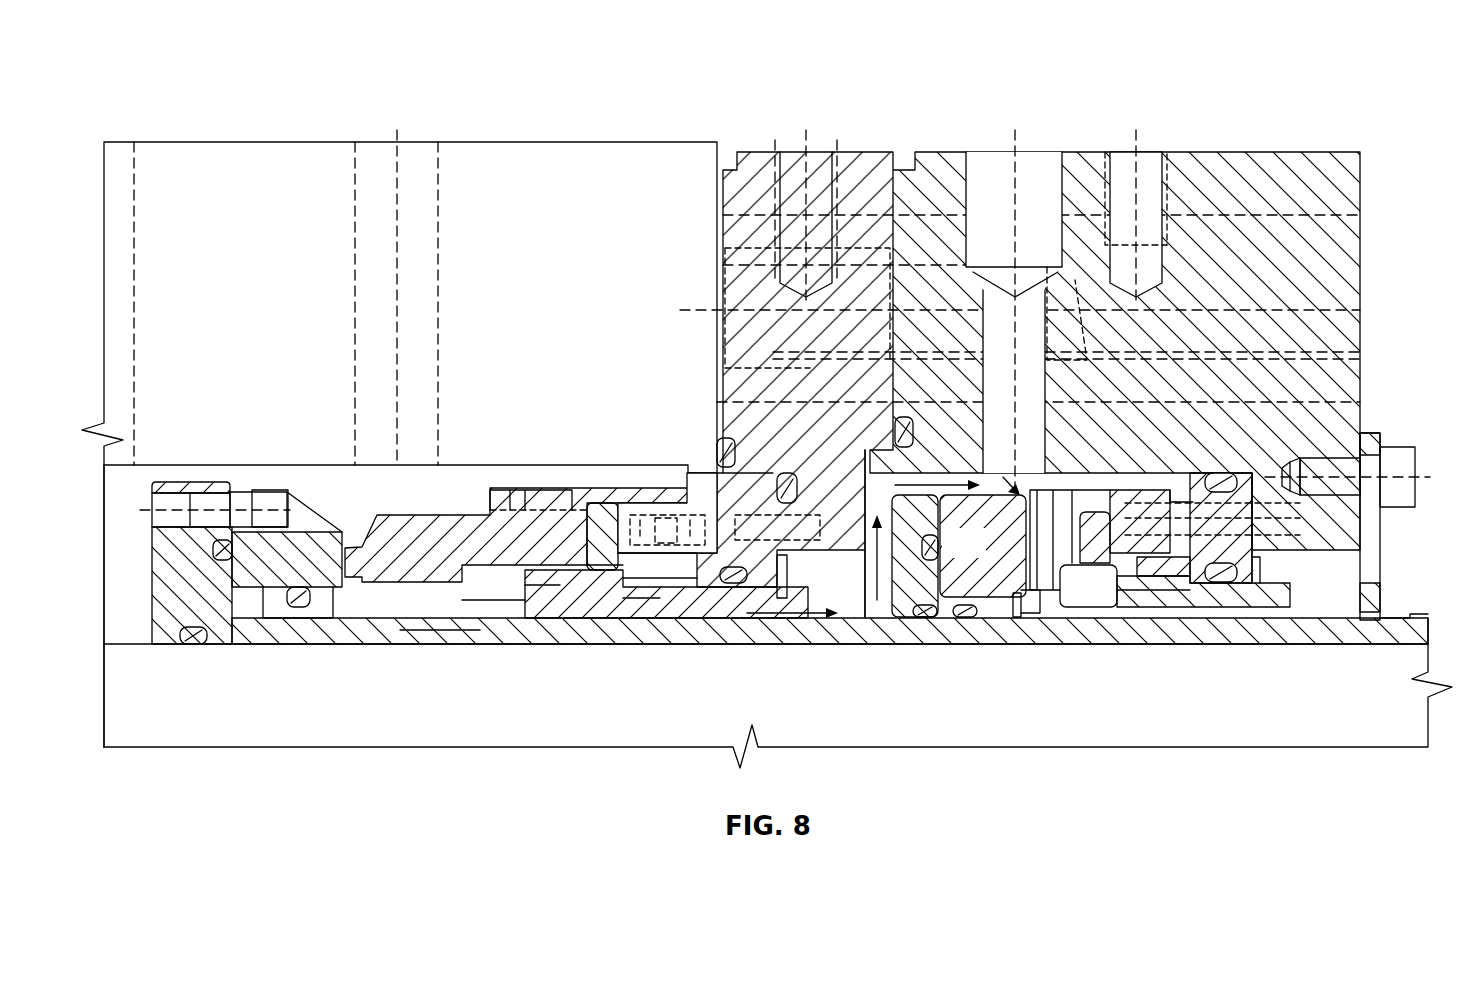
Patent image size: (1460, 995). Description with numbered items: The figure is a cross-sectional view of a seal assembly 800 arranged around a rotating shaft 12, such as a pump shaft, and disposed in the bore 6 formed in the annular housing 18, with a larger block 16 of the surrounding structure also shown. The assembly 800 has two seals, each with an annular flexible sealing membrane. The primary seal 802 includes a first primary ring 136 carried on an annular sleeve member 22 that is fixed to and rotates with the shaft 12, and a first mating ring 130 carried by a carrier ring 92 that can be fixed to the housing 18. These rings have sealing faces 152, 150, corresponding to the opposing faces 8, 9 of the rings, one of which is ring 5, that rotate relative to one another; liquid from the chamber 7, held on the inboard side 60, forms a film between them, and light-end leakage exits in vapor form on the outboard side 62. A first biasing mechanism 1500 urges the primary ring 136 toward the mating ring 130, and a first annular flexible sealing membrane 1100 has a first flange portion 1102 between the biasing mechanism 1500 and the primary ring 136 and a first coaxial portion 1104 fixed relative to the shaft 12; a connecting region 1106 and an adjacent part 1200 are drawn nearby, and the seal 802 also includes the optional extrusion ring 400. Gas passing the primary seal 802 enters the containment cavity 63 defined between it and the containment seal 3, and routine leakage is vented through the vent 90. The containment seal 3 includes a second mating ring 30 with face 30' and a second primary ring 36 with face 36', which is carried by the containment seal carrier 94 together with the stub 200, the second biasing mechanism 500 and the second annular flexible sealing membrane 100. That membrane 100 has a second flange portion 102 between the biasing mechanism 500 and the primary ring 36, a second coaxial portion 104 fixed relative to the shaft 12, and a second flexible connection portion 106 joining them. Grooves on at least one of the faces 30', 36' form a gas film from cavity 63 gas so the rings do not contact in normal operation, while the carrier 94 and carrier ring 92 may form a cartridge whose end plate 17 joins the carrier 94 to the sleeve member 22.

The seal assembly 800 is at (625, 95).
The annular housing 18 is at (399, 438).
The mounting block 16 is at (1063, 384).
The carrier ring 92 is at (753, 152).
The vent 90 is at (947, 175).
The containment seal carrier 94 is at (1250, 170).
The bore 6 is at (168, 480).
The inboard side 60 is at (291, 500).
The sealing face 152 is at (352, 553).
The chamber 7 is at (118, 606).
The first mating ring 130 is at (258, 568).
The sealing face 150 is at (330, 575).
The first primary ring 136 is at (400, 570).
The primary seal 802 is at (479, 488).
The first flange portion 1102 is at (600, 520).
The first biasing mechanism 1500 is at (664, 497).
The face 9 is at (674, 543).
The face 8 is at (645, 554).
The ring 5 is at (757, 535).
The first annular flexible sealing membrane 1100 is at (690, 585).
The first coaxial portion 1104 is at (650, 578).
The bracket arm 1106 is at (615, 575).
The plate 1200 is at (640, 600).
The extrusion ring 400 is at (540, 585).
The outboard side 62 is at (498, 598).
The annular sleeve member 22 is at (440, 632).
The rotating shaft 12 is at (796, 658).
The containment seal 3 is at (1004, 684).
The containment cavity 63 is at (883, 590).
The second mating ring 30 is at (956, 590).
The face 30' is at (990, 556).
The second primary ring 36 is at (1165, 599).
The second flange portion 102 is at (1100, 548).
The face 36' is at (1081, 586).
The second annular flexible sealing membrane 100 is at (1165, 595).
The second flexible connection portion 106 is at (1140, 590).
The stub 200 is at (1195, 598).
The second coaxial portion 104 is at (1235, 598).
The second biasing mechanism 500 is at (1240, 550).
The end plate 17 is at (1382, 555).